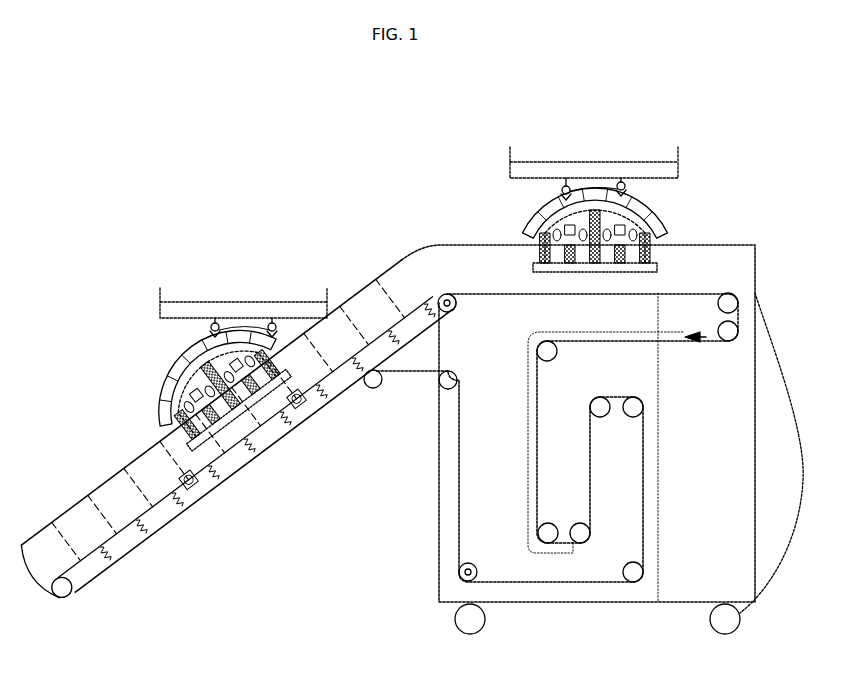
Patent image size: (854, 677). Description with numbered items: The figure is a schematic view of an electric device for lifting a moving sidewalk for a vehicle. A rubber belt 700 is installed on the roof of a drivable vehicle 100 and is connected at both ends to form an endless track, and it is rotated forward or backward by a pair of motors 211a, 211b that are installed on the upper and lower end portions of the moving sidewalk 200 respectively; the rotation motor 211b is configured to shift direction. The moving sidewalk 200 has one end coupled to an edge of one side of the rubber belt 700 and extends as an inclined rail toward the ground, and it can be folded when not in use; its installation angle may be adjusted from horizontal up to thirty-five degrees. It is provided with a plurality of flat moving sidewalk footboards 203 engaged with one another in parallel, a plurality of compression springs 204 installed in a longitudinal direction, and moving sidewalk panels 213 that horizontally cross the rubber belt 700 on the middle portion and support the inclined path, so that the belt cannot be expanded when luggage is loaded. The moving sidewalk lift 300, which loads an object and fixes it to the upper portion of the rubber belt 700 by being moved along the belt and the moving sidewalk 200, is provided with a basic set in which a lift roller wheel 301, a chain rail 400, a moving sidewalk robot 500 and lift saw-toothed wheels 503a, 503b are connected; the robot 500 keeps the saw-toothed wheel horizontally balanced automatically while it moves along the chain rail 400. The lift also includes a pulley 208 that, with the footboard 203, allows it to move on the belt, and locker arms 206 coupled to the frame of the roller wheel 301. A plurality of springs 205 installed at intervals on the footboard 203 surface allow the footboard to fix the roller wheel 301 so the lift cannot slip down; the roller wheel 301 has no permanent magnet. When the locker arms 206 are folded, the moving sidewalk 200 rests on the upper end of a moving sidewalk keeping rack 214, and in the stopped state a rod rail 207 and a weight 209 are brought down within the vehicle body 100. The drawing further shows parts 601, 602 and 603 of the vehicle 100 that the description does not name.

The drivable vehicle 100 is at (437, 490).
The moving sidewalk 200 is at (68, 507).
The moving sidewalk footboard 203 is at (255, 438).
The compression spring 204 is at (112, 560).
The spring 205 is at (185, 432).
The locker arm 206 is at (195, 492).
The rod rail 207 is at (527, 382).
The pulley 208 is at (740, 303).
The weight 209 is at (695, 343).
The motor 211a is at (457, 306).
The rotation motor 211b is at (475, 568).
The moving sidewalk panel 213 is at (170, 512).
The moving sidewalk keeping rack 214 is at (413, 373).
The moving sidewalk lift 300 is at (183, 296).
The lift roller wheel 301 is at (180, 378).
The chain rail 400 is at (158, 404).
The moving sidewalk robot 500 is at (254, 322).
The lift saw-toothed wheel 503a is at (214, 321).
The lift saw-toothed wheel 503b is at (274, 322).
The rear wheel 601 is at (737, 617).
The front wheel 602 is at (456, 620).
The partition 603 is at (660, 498).
The rubber belt 700 is at (493, 288).